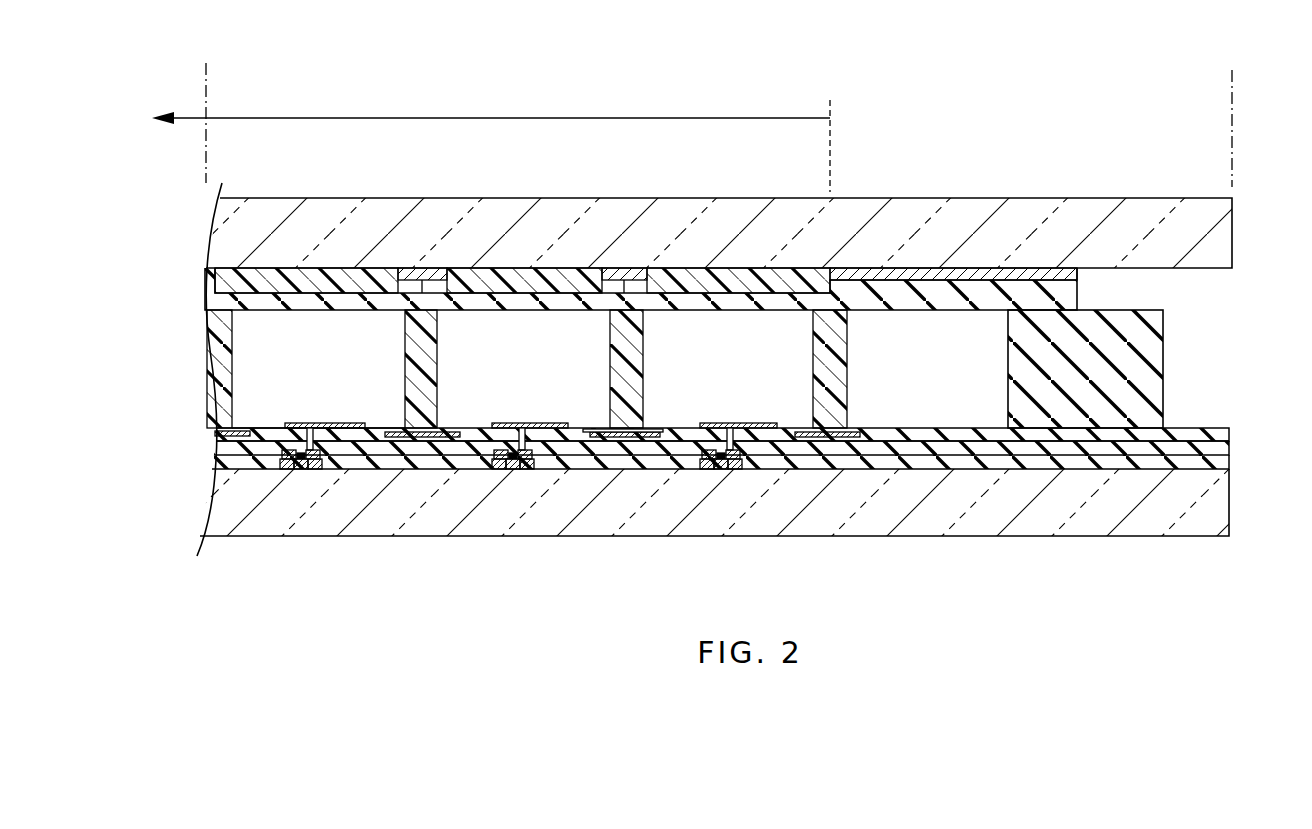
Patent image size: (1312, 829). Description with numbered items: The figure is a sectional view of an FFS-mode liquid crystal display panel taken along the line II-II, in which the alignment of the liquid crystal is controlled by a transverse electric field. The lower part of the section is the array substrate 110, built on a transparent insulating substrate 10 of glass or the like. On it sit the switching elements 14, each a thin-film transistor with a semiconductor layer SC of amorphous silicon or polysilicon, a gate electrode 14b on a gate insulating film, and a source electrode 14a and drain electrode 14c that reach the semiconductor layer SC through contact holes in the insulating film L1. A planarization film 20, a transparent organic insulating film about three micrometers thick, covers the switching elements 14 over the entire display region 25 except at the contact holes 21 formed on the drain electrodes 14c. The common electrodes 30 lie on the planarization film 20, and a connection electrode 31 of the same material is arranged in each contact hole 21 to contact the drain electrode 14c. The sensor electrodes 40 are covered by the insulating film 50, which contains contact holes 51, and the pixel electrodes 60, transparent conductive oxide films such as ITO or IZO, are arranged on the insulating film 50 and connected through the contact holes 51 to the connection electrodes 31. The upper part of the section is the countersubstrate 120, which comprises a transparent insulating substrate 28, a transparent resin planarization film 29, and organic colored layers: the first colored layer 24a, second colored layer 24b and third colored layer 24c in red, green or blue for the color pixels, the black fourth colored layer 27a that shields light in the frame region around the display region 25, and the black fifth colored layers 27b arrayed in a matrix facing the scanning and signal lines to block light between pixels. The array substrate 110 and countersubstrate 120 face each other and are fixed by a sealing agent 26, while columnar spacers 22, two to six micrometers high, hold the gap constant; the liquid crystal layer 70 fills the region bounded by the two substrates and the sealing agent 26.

The transparent insulating substrate 10 is at (1218, 503).
The switching element 14 is at (447, 587).
The source electrode 14a is at (492, 462).
The gate electrode 14b is at (515, 463).
The drain electrode 14c is at (542, 460).
The semiconductor layer SC is at (507, 467).
The planarization film 20 is at (958, 448).
The contact hole 21 is at (743, 443).
The columnar spacer 22 is at (847, 372).
The first colored layer 24a is at (527, 285).
The second colored layer 24b is at (290, 280).
The third colored layer 24c is at (708, 285).
The display region 25 is at (491, 141).
The sealing agent 26 is at (1150, 328).
The fourth colored layer 27a is at (925, 275).
The fifth colored layer 27b is at (418, 275).
The transparent insulating substrate 28 is at (1218, 242).
The transparent resin planarization film 29 is at (337, 303).
The common electrode 30 is at (587, 435).
The connection electrode 31 is at (730, 447).
The sensor electrode 40 is at (650, 430).
The insulating film 50 is at (1222, 432).
The contact hole 51 is at (723, 432).
The pixel electrode 60 is at (758, 427).
The liquid crystal layer 70 is at (262, 397).
The array substrate 110 is at (182, 418).
The countersubstrate 120 is at (182, 198).
The insulating film L1 is at (1222, 462).
The line II- II is at (719, 113).